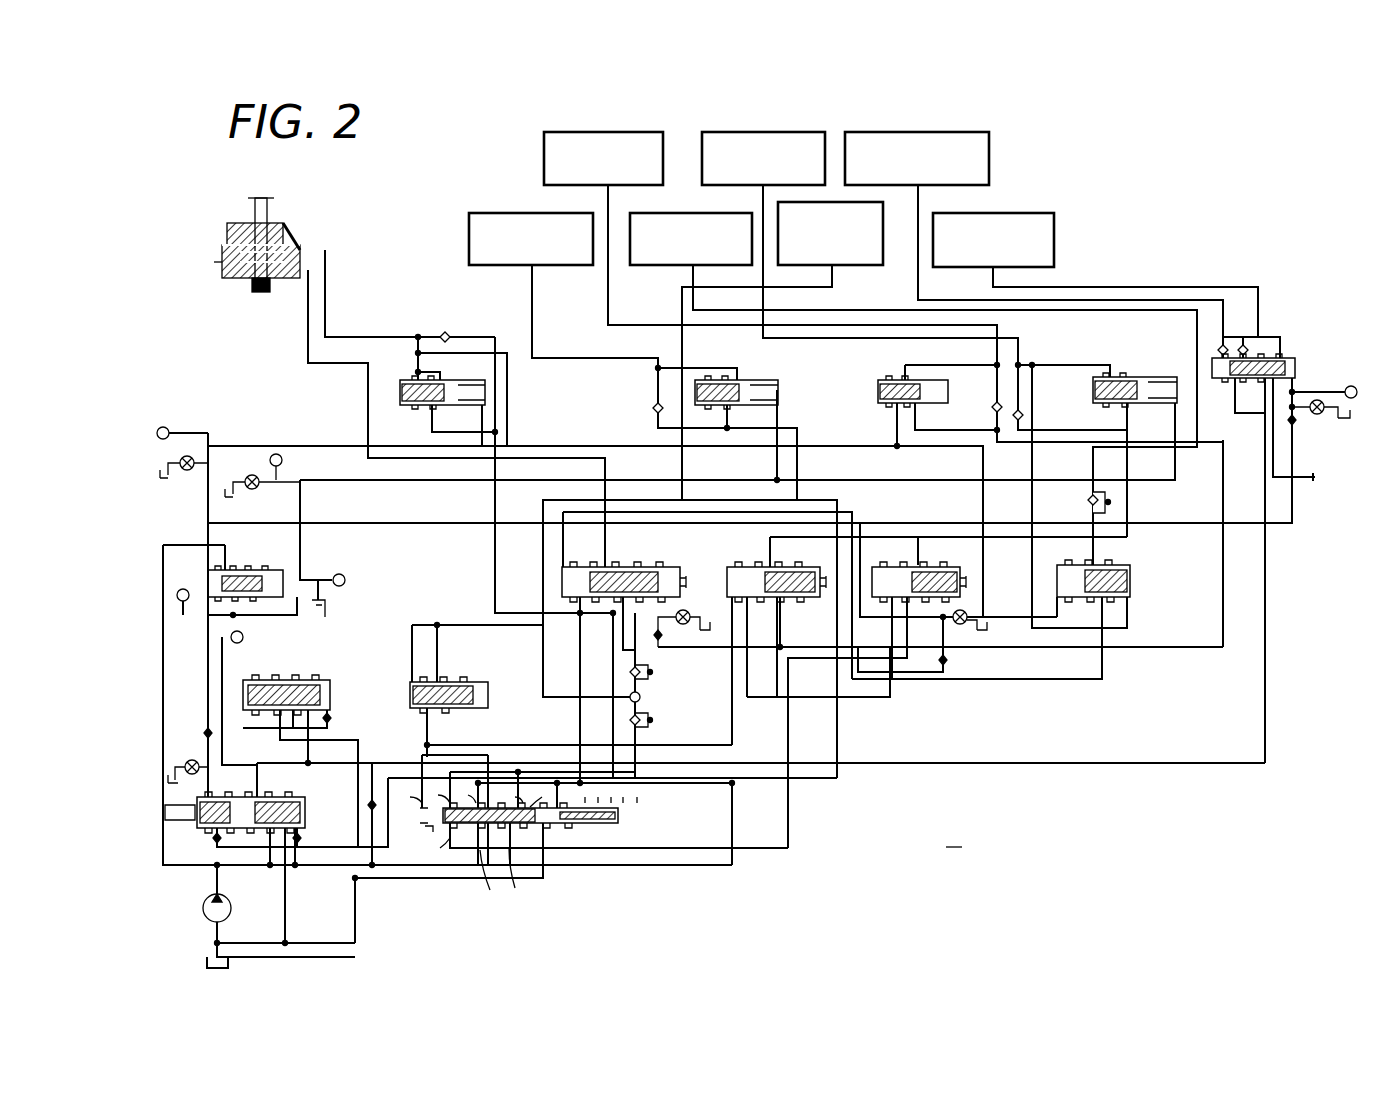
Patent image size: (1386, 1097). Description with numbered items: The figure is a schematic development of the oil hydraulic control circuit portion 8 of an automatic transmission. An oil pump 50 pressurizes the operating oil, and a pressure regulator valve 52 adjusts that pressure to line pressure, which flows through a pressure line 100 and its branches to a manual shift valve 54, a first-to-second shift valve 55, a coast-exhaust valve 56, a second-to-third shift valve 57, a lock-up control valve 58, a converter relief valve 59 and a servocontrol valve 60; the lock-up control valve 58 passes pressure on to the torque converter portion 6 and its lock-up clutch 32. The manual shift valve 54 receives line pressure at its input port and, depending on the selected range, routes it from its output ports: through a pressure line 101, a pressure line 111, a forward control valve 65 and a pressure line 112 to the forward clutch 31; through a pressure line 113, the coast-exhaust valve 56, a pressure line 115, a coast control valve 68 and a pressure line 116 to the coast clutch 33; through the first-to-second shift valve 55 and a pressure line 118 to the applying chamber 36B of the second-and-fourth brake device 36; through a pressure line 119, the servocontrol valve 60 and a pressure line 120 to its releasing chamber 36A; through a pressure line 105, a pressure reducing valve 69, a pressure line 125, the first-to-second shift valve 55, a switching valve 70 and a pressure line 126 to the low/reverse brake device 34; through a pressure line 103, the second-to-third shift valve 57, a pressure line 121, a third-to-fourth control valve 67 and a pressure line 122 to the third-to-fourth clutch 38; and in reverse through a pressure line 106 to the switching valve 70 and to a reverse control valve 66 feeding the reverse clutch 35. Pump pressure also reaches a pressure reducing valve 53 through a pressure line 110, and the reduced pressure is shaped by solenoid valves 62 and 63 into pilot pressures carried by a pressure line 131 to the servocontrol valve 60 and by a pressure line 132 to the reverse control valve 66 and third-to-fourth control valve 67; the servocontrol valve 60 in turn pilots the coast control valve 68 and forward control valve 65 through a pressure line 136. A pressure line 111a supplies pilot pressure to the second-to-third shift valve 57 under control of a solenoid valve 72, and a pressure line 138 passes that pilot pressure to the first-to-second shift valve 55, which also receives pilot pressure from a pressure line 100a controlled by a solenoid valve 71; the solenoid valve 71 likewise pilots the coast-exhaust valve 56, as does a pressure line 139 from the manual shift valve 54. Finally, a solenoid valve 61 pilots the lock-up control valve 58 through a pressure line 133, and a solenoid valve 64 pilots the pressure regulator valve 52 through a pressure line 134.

The torque converter portion 6 is at (874, 132).
The oil hydraulic control circuit portion 8 is at (954, 835).
The forward clutch 31 is at (568, 132).
The lock-up clutch 32 is at (1040, 212).
The coast clutch 33 is at (640, 266).
The low/reverse brake device 34 is at (852, 266).
The reverse clutch 35 is at (488, 211).
The 2-4 brake device 36 is at (260, 233).
The releasing chamber 36A is at (300, 240).
The applying chamber 36B is at (214, 263).
The 3-4 clutch 38 is at (734, 132).
The oil pump 50 is at (205, 903).
The pressure regulator valve 52 is at (236, 793).
The pressure reducing valve 53 is at (256, 573).
The manual shift valve 54 is at (645, 818).
The 1-2 shift valve 55 is at (623, 575).
The coast-exhaust valve 56 is at (752, 575).
The 2-3 shift valve 57 is at (892, 575).
The lock-up control valve 58 is at (1298, 358).
The converter relief valve 59 is at (338, 688).
The servocontrol valve 60 is at (408, 402).
The solenoid valve 61 is at (1319, 414).
The solenoid valve 62 is at (187, 474).
The solenoid valve 63 is at (253, 487).
The solenoid valve 64 is at (189, 759).
The forward control valve 65 is at (878, 380).
The reverse control valve 66 is at (782, 392).
The 3-4 control valve 67 is at (1093, 408).
The coast control valve 68 is at (1133, 578).
The pressure reducing valve 69 is at (464, 712).
The switching valve 70 is at (660, 704).
The solenoid valve 71 is at (683, 608).
The solenoid valve 72 is at (958, 608).
The pressure line 100 is at (616, 866).
The pressure line 100a is at (780, 650).
The pressure line 101 is at (613, 688).
The pressure line 103 is at (788, 820).
The pressure line 105 is at (427, 730).
The pressure line 106 is at (838, 735).
The pressure line 110 is at (162, 711).
The pressure line 111 is at (1184, 647).
The pressure line 111a is at (943, 660).
The pressure line 112 is at (724, 326).
The pressure line 113 is at (780, 627).
The pressure line 115 is at (1037, 679).
The pressure line 116 is at (1132, 315).
The pressure line 118 is at (607, 470).
The pressure line 119 is at (495, 561).
The pressure line 120 is at (389, 336).
The pressure line 121 is at (1128, 501).
The pressure line 122 is at (1018, 358).
The pressure line 125 is at (456, 625).
The pressure line 126 is at (542, 651).
The pressure line 131 is at (312, 446).
The pressure line 132 is at (353, 480).
The pressure line 133 is at (405, 523).
The pressure line 134 is at (205, 664).
The pressure line 136 is at (565, 446).
The pressure line 138 is at (855, 512).
The pressure line 139 is at (734, 720).